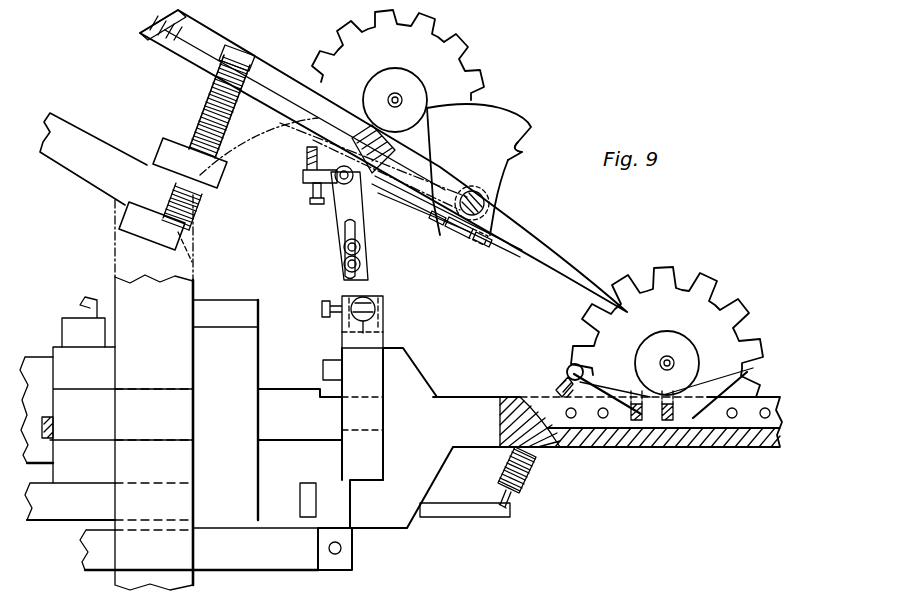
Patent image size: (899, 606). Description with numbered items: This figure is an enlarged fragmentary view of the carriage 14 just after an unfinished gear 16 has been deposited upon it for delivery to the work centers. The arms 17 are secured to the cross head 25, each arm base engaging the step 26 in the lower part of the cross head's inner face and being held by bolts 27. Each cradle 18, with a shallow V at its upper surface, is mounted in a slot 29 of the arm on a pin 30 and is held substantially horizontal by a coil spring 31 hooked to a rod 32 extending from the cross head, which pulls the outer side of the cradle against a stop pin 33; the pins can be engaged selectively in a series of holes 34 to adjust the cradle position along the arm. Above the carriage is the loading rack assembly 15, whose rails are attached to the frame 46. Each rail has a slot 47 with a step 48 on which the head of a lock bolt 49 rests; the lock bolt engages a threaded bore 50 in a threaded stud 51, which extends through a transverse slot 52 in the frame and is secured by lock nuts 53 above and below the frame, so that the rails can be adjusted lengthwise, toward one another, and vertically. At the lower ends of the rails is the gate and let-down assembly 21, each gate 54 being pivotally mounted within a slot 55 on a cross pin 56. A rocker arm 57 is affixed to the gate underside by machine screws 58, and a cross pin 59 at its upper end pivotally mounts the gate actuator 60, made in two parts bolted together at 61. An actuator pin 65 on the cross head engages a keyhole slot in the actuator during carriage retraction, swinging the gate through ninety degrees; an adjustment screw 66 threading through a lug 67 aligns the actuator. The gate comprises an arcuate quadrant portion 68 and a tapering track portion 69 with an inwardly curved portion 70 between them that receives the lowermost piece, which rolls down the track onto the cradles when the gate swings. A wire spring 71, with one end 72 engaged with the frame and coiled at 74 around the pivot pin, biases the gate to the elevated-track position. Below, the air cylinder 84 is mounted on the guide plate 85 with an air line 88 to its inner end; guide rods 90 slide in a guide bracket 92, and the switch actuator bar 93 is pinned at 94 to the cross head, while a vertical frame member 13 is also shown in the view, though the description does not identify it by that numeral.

The frame column 13 is at (150, 582).
The carriage 14 is at (386, 389).
The loading rack assembly 15 is at (163, 20).
The unfinished gear 16 is at (458, 43).
The arm 17 is at (742, 430).
The cradle 18 is at (607, 392).
The gate and let-down assembly 21 is at (520, 206).
The cross head 25 is at (385, 345).
The step 26 is at (368, 483).
The bolt 27 is at (330, 370).
The slot 29 is at (543, 403).
The pin 30 is at (689, 448).
The coil spring 31 is at (522, 481).
The rod 32 is at (462, 517).
The stop pin 33 is at (632, 425).
The holes 34 is at (572, 420).
The frame 46 is at (58, 148).
The slot 47 is at (183, 45).
The step 48 is at (208, 45).
The lock bolt 49 is at (250, 60).
The threaded bore 50 is at (205, 87).
The threaded stud 51 is at (233, 117).
The transverse slot 52 is at (207, 218).
The lock nut 53 is at (157, 158).
The gate 54 is at (508, 176).
The slot 55 is at (427, 185).
The cross pin 56 is at (468, 233).
The rocker arm 57 is at (410, 193).
The machine screw 58 is at (440, 224).
The cross pin 59 is at (352, 183).
The gate actuator 60 is at (340, 233).
The bolt 61 is at (344, 264).
The actuator pin 65 is at (376, 306).
The adjustment screw 66 is at (312, 200).
The lug 67 is at (303, 177).
The arcuate quadrant portion 68 is at (512, 108).
The tapering track portion 69 is at (593, 270).
The inwardly curved portion 70 is at (524, 150).
The wire spring 71 is at (281, 132).
The end of wire spring 72 is at (193, 253).
The coil of spring 74 is at (473, 190).
The air cylinder 84 is at (35, 368).
The guide plate 85 is at (80, 492).
The air line 88 is at (75, 311).
The guide rod 90 is at (90, 401).
The guide bracket 92 is at (245, 343).
The switch actuator bar 93 is at (222, 556).
The pin 94 is at (352, 553).